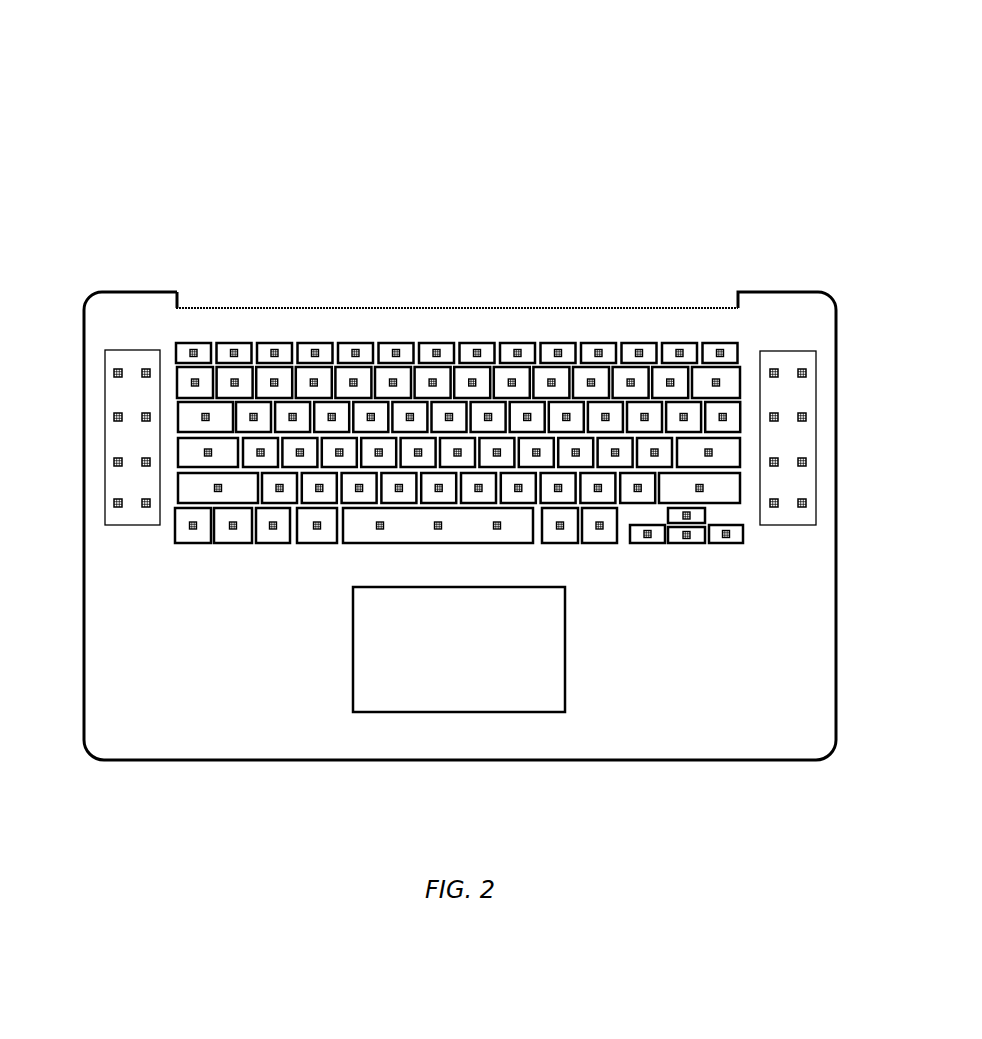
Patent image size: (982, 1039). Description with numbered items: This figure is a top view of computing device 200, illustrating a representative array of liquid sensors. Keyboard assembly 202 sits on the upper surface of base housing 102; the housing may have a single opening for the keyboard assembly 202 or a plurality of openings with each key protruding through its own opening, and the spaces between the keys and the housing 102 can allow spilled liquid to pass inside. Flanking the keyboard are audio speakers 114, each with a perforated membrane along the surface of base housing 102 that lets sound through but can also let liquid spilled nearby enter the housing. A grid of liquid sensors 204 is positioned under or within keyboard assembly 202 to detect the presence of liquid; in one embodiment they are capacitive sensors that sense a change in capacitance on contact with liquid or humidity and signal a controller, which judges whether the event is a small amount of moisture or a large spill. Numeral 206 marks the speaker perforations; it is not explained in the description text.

The computing device 200 is at (198, 87).
The base housing 102 is at (589, 307).
The audio speakers 114 is at (133, 349).
The keyboard assembly 202 is at (356, 342).
The liquid sensors 204 is at (234, 342).
The speaker hole 206 is at (114, 373).